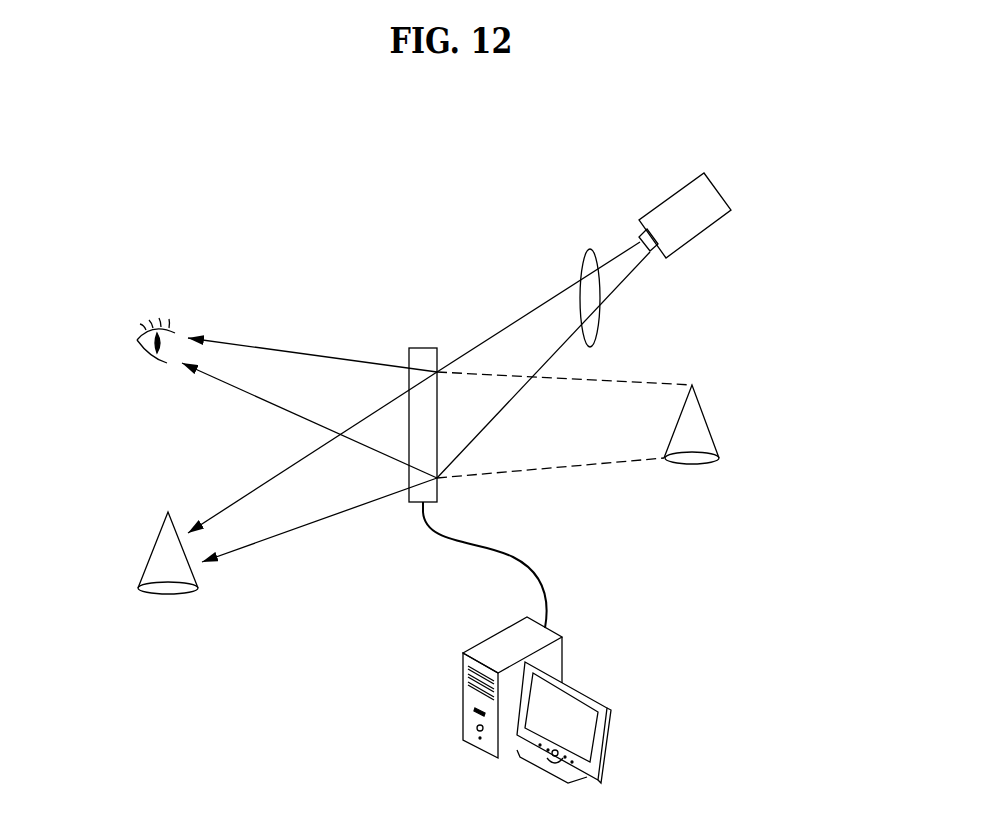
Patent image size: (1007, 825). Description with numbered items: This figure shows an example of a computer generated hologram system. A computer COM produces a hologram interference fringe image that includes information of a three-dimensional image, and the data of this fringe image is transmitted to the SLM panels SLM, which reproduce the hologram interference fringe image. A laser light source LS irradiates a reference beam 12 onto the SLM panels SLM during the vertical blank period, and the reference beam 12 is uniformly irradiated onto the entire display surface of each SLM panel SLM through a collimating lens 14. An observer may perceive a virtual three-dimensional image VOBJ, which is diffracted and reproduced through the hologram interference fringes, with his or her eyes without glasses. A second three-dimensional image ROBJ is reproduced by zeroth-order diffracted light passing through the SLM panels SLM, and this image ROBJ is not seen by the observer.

The reference beam 12 is at (615, 256).
The collimating lens 14 is at (588, 249).
The laser light source LS is at (720, 192).
The SLM panels SLM is at (422, 347).
The virtual 3D image VOBJ is at (578, 435).
The 3D image reproduced by 0th-order diffracted light ROBJ is at (168, 570).
The computer COM is at (463, 698).